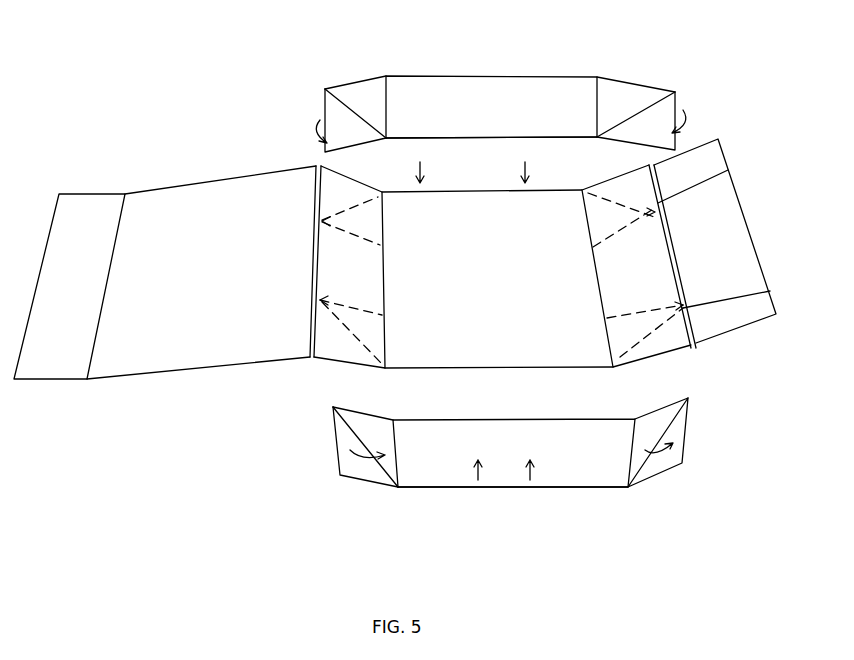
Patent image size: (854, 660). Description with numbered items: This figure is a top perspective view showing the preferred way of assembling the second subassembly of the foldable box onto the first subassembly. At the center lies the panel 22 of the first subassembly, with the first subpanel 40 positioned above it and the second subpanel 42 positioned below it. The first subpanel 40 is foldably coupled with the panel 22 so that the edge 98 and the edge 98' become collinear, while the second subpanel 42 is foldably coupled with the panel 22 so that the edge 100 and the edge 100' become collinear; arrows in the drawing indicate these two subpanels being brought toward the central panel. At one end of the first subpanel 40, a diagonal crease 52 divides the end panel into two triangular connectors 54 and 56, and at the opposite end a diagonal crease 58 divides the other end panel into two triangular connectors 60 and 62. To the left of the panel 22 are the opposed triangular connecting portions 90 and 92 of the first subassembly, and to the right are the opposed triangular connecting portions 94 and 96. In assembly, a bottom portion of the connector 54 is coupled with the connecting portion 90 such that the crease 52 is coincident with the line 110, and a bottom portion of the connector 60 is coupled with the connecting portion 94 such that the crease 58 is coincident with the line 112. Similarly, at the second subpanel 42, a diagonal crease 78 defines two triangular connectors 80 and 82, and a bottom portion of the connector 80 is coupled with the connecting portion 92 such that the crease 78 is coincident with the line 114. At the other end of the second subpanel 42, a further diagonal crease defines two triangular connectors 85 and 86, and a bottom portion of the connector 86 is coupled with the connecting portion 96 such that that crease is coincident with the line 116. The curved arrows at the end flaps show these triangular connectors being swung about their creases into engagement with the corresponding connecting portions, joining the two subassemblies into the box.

The panel 22 is at (563, 352).
The first subpanel 40 is at (462, 105).
The second subpanel 42 is at (438, 478).
The diagonal fold 52 is at (351, 98).
The triangular connector 54 is at (333, 117).
The triangular connector 56 is at (365, 88).
The diagonal fold 58 is at (642, 110).
The triangular connector 60 is at (670, 110).
The triangular connector 62 is at (627, 95).
The diagonal fold 78 is at (383, 468).
The triangular connector 80 is at (340, 433).
The triangular connector 82 is at (372, 427).
The triangular connector 85 is at (655, 422).
The triangular connector 86 is at (672, 462).
The triangular connecting portion 90 is at (338, 218).
The triangular connecting portion 92 is at (362, 323).
The triangular connecting portion 94 is at (728, 170).
The triangular connecting portion 96 is at (770, 291).
The edge 98 is at (482, 173).
The edge 98' is at (491, 152).
The edge 100 is at (499, 388).
The edge 100' is at (513, 501).
The line 110 is at (348, 208).
The line 112 is at (607, 197).
The line 114 is at (360, 340).
The line 116 is at (643, 333).